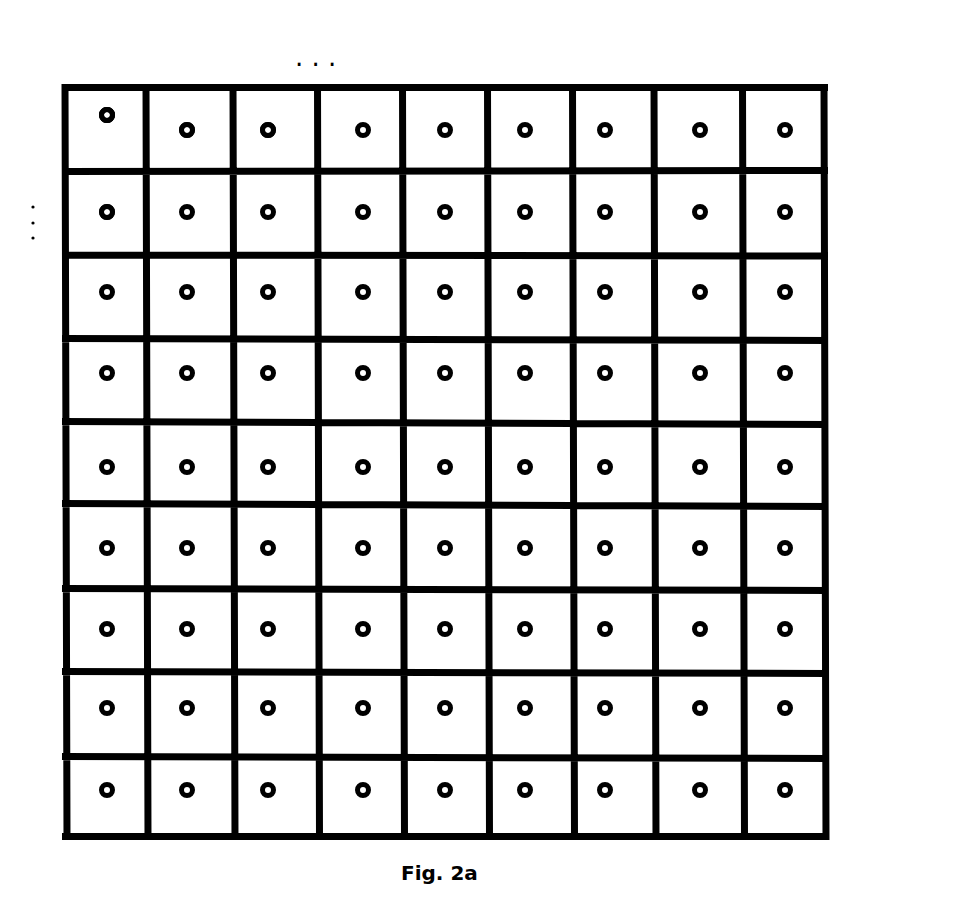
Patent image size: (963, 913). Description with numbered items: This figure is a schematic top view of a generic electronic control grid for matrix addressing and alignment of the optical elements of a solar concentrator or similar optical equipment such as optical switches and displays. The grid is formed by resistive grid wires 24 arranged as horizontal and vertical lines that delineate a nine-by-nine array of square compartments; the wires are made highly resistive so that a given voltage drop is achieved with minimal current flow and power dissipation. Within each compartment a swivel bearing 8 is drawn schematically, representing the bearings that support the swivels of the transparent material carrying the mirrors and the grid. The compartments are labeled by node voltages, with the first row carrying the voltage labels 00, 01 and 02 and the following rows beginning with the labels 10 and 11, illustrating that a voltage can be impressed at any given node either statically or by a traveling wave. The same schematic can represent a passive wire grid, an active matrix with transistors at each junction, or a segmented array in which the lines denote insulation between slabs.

The resistive grid wires 24 is at (850, 255).
The swivel bearings 8 is at (790, 374).
The cell voltage V00 00 is at (75, 79).
The cell voltage V01 01 is at (158, 86).
The cell voltage V02 02 is at (245, 86).
The cell voltage V10 10 is at (63, 181).
The cell voltage V11 11 is at (109, 122).